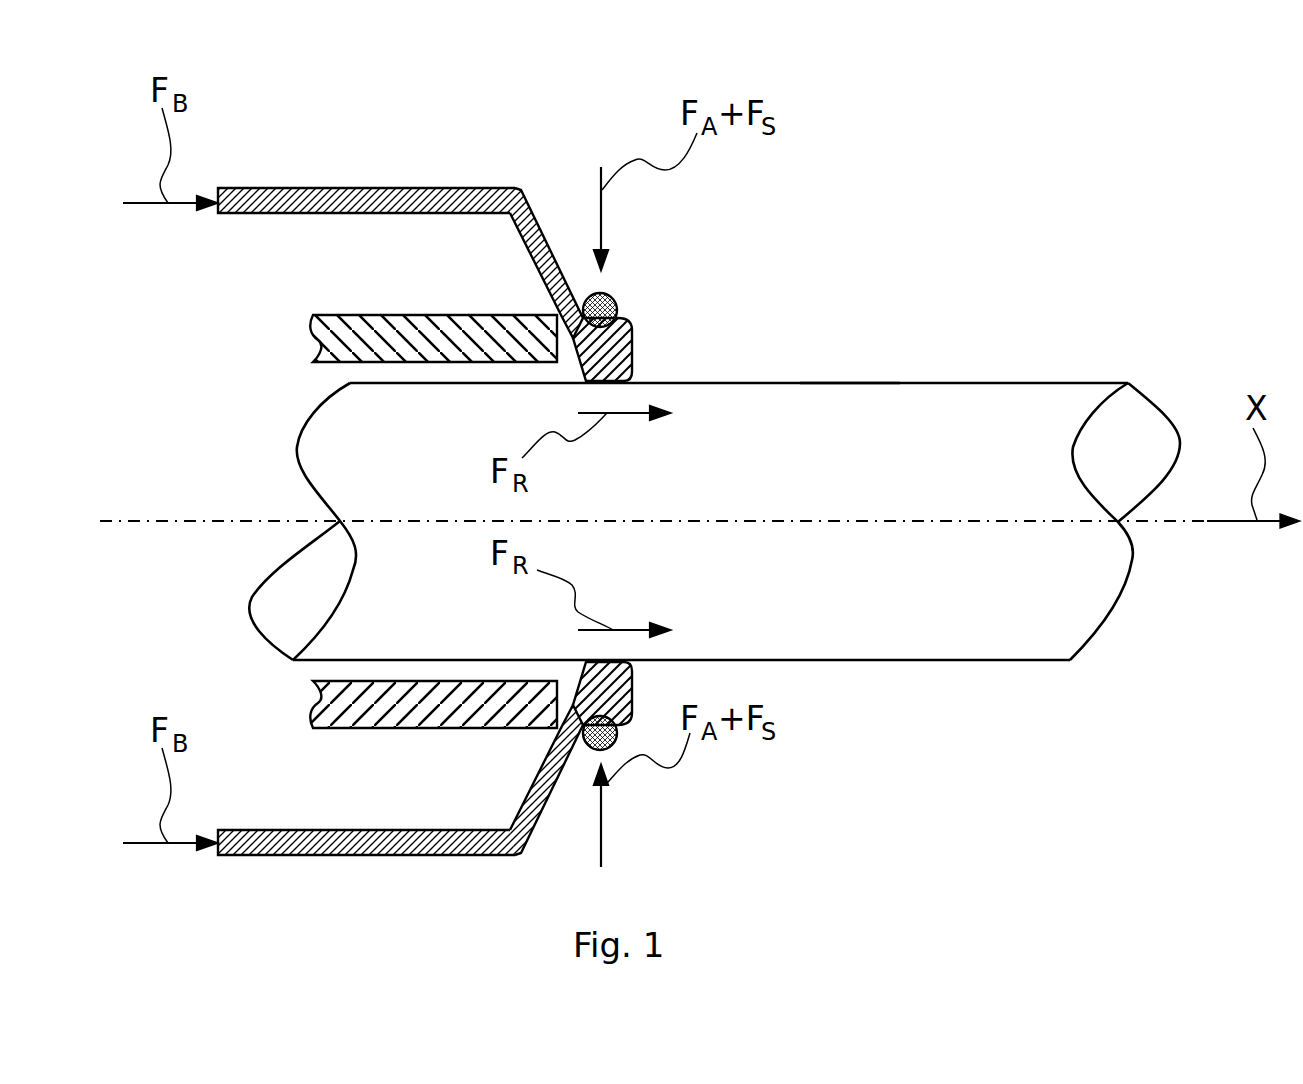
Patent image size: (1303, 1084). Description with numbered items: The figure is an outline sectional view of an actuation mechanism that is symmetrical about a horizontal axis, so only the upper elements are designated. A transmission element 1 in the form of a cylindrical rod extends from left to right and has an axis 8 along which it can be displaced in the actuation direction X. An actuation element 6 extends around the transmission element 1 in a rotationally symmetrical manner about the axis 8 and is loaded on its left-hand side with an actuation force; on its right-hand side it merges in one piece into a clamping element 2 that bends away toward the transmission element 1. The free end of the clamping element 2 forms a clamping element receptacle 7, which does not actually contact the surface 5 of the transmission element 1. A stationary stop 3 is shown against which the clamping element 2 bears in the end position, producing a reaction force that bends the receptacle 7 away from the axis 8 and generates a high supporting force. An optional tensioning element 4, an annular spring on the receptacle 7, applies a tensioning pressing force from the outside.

The transmission element 1 is at (1013, 437).
The clamping element 2 is at (540, 228).
The stop 3 is at (333, 363).
The tensioning element 4 is at (612, 294).
The surface 5 is at (855, 383).
The actuation element 6 is at (443, 188).
The clamping element receptacle 7 is at (633, 328).
The axis 8 is at (155, 520).